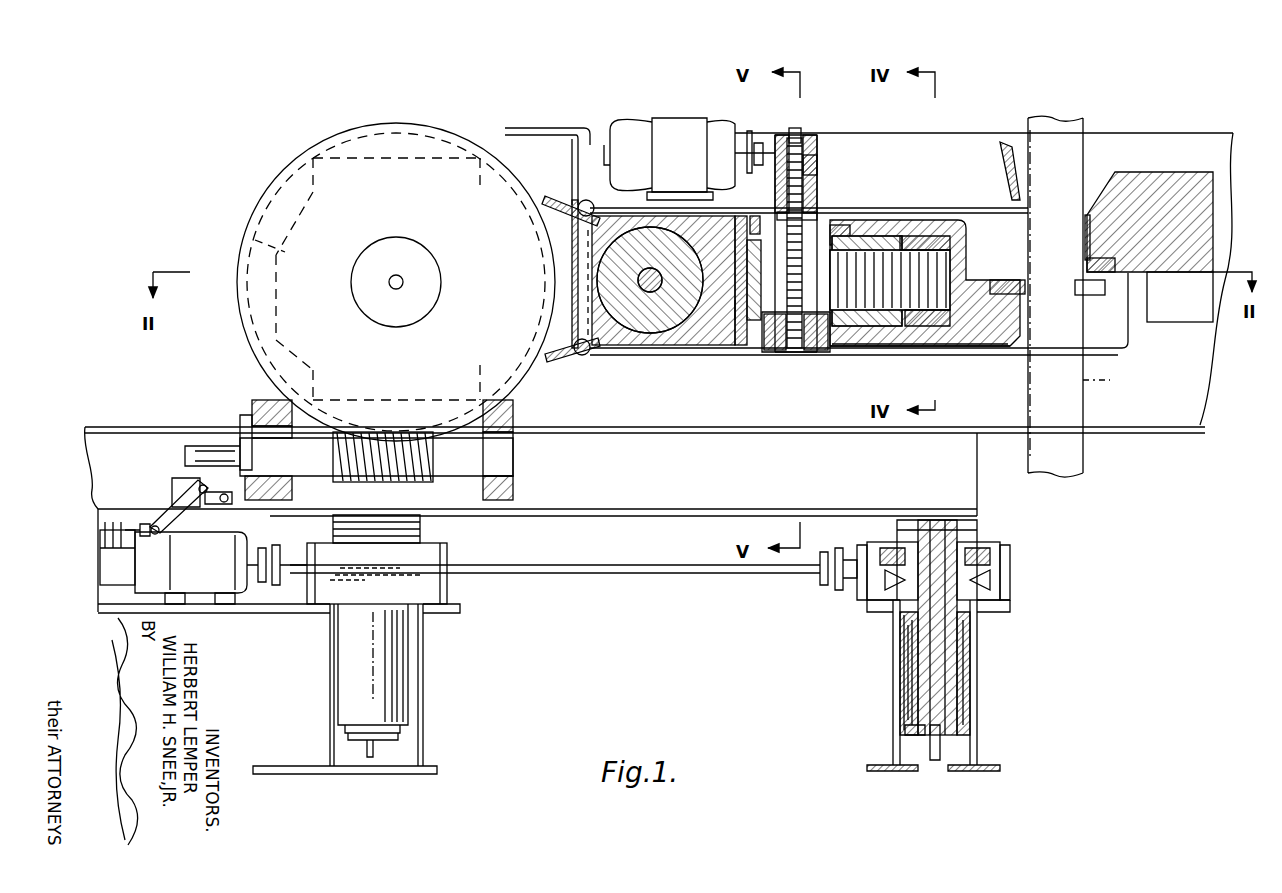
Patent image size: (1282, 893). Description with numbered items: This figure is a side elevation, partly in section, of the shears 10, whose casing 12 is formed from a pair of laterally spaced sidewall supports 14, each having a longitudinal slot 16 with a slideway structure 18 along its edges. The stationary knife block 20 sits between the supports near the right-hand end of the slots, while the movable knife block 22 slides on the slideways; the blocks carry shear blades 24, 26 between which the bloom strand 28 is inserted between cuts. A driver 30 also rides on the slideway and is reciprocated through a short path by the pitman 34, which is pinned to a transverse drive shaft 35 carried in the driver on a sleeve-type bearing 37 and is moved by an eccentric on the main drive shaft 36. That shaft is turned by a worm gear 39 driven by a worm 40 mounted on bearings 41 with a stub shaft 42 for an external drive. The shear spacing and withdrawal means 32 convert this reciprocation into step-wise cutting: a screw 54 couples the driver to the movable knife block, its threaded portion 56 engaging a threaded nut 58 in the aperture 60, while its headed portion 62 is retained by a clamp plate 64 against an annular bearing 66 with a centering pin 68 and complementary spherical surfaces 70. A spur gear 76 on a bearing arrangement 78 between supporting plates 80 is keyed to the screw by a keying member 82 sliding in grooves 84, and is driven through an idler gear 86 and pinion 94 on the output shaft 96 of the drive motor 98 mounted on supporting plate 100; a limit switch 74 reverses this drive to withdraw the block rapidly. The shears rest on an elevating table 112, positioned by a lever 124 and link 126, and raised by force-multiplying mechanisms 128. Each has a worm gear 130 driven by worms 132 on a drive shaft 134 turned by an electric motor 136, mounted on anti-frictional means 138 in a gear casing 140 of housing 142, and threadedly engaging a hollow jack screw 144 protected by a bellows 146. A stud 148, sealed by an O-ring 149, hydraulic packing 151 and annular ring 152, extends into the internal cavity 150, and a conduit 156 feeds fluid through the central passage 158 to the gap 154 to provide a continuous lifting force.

The shears 10 is at (194, 158).
The casing 12 is at (348, 125).
The sidewall supports 14 is at (968, 133).
The slots 16 is at (1062, 205).
The slideway structure 18 is at (930, 215).
The stationary knife block 20 is at (1172, 172).
The movable knife block 22 is at (958, 348).
The shear blade 24 is at (1105, 295).
The shear blade 26 is at (1010, 280).
The bloom strand 28 is at (1115, 388).
The driver 30 is at (665, 345).
The shear spacing and withdrawal means 32 is at (878, 180).
The pitman 34 is at (245, 240).
The transverse drive shaft 35 is at (595, 222).
The main drive shaft 36 is at (350, 262).
The sleeve-type bearing 37 is at (588, 252).
The worm gear 39 is at (272, 178).
The worm 40 is at (392, 481).
The bearings 41 is at (292, 478).
The stub shaft 42 is at (232, 440).
The screw 54 is at (925, 310).
The threaded portion 56 is at (950, 225).
The threaded nut 58 is at (908, 232).
The aperture 60 is at (945, 318).
The headed portion 62 is at (750, 348).
The clamp plate 64 is at (740, 345).
The annular bearing 66 is at (690, 262).
The centering pin 68 is at (732, 312).
The spherical surfaces 70 is at (732, 262).
The limit switch 74 is at (1100, 258).
The spur gear 76 is at (795, 352).
The bearing arrangement 78 is at (748, 228).
The supporting plates 80 is at (776, 214).
The keying member 82 is at (923, 237).
The grooves 84 is at (789, 243).
The idler gear 86 is at (820, 196).
The pinion 94 is at (800, 130).
The output shaft 96 is at (818, 175).
The drive motor 98 is at (642, 117).
The supporting plate 100 is at (640, 212).
The elevating table 112 is at (717, 520).
The lever 124 is at (170, 500).
The link 126 is at (215, 505).
The force-multiplying mechanism 128 is at (338, 678).
The worm gear 130 is at (1000, 555).
The worms 132 is at (447, 598).
The drive shaft 134 is at (668, 575).
The electric motor 136 is at (240, 595).
The anti-frictional means 138 is at (868, 545).
The gear casing 140 is at (1010, 582).
The housing 142 is at (978, 660).
The jack screw 144 is at (912, 635).
The bellows 146 is at (978, 528).
The stud 148 is at (968, 685).
The O-ring 149 is at (905, 728).
The internal cavity 150 is at (918, 625).
The hydraulic packing 151 is at (912, 695).
The annular ring 152 is at (1008, 672).
The gap 154 is at (935, 520).
The conduit 156 is at (375, 748).
The central passage 158 is at (915, 655).